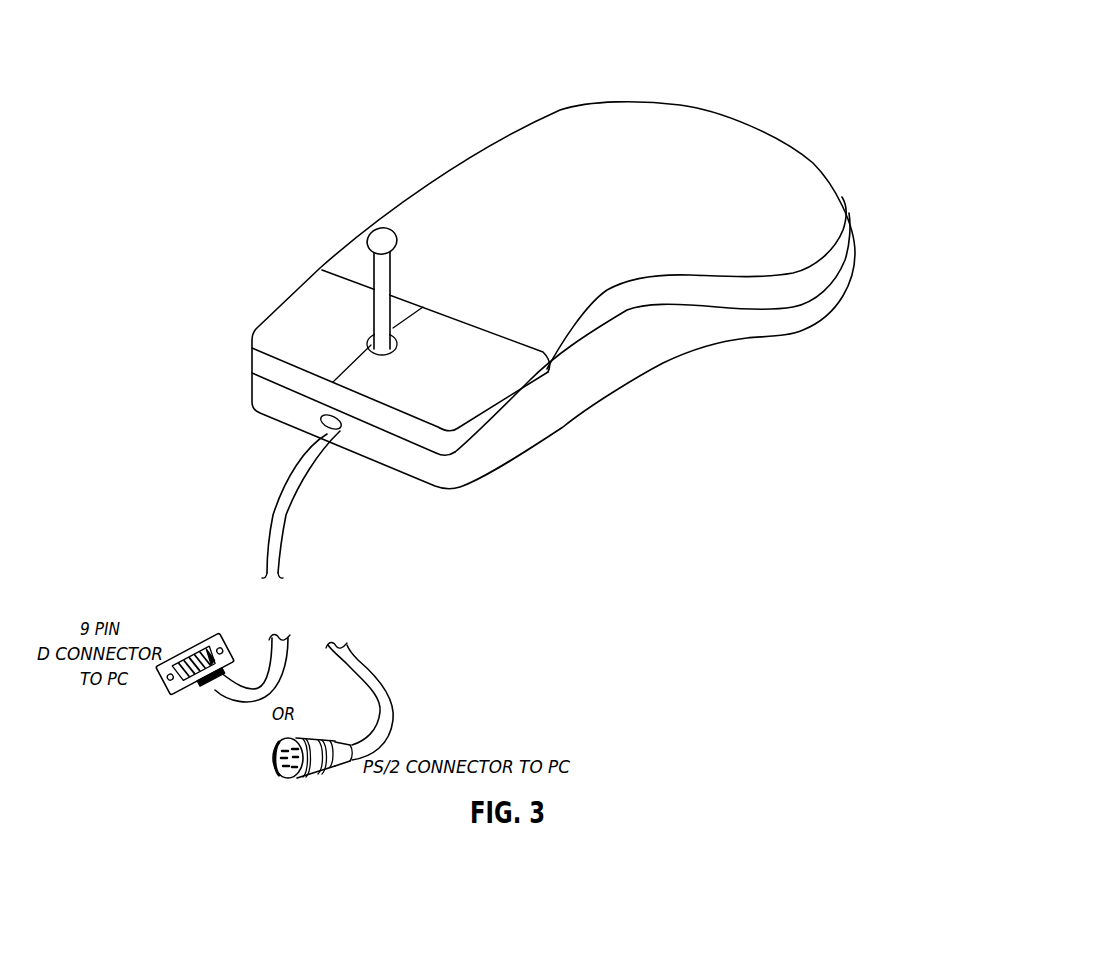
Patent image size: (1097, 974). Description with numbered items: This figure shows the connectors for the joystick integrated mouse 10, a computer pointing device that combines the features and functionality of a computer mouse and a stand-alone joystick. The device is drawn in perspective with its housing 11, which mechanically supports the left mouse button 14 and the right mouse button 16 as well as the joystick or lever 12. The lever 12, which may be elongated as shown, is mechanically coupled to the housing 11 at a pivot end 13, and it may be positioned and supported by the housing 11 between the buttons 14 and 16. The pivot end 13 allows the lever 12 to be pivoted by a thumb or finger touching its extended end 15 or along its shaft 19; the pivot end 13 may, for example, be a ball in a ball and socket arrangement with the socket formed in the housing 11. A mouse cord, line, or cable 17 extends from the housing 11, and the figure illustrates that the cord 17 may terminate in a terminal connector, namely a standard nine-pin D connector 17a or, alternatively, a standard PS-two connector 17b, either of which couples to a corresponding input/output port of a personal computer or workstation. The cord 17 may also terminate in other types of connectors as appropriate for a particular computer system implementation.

The joystick integrated mouse 10 is at (853, 94).
The housing 11 is at (697, 128).
The lever 12 is at (389, 272).
The pivot end 13 is at (369, 345).
The button 14 is at (443, 398).
The extended end 15 is at (371, 237).
The button 16 is at (272, 337).
The cable 17 is at (268, 533).
The 9-pin D connector 17a is at (193, 693).
The PS/2 connector 17b is at (308, 778).
The shaft 19 is at (377, 297).